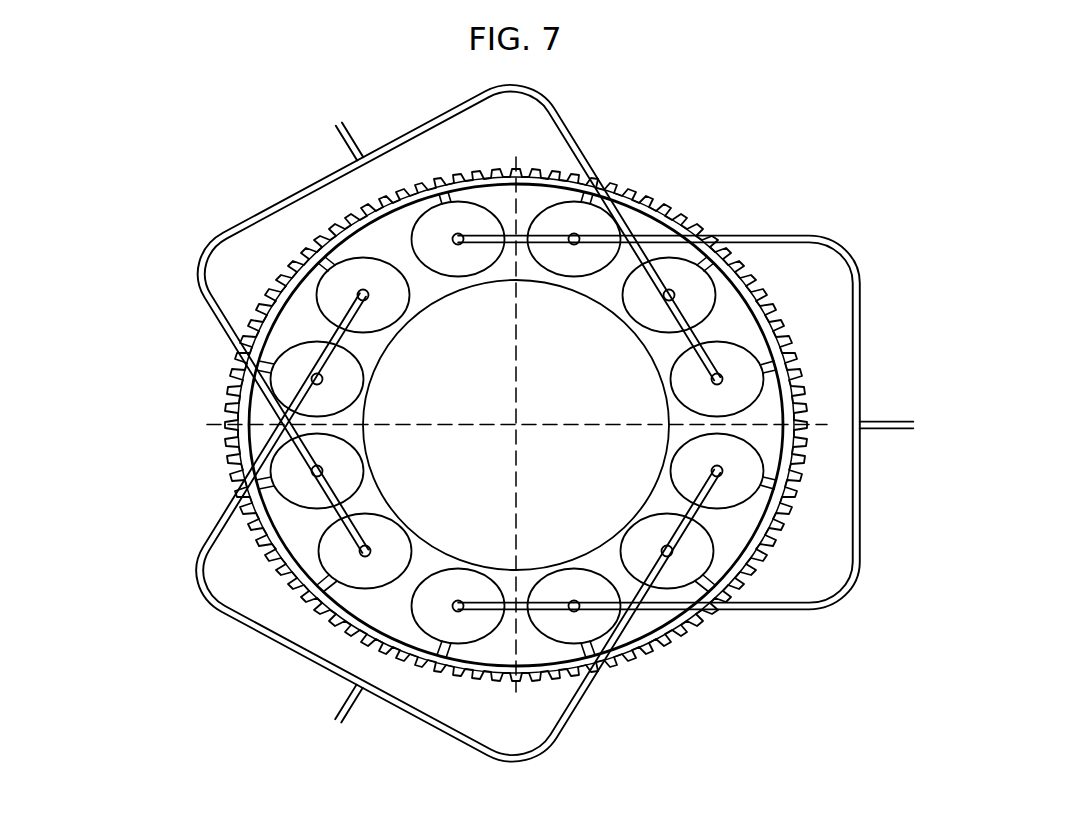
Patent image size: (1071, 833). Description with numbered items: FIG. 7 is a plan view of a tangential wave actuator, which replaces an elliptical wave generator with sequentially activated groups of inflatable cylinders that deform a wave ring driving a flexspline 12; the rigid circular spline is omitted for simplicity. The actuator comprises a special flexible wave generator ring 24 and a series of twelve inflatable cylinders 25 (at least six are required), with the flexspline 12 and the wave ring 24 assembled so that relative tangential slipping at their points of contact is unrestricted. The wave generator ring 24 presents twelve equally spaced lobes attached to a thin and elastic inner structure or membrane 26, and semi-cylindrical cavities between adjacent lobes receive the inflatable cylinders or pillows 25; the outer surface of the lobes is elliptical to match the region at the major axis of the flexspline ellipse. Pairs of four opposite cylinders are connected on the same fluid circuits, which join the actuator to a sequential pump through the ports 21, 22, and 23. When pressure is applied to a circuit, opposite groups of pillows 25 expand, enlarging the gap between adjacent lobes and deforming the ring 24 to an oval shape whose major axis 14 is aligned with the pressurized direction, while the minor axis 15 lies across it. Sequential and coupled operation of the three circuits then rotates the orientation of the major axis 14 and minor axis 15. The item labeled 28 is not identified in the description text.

The flexspline 12 is at (648, 228).
The major axis 14 is at (517, 683).
The minor axis 15 is at (213, 424).
The port 21 is at (915, 422).
The port 22 is at (330, 722).
The port 23 is at (328, 124).
The wave generator ring 24 is at (677, 222).
The inflatable cylinders 25 is at (735, 366).
The inner structure or membrane 26 is at (738, 521).
The key tabs 28 is at (292, 340).